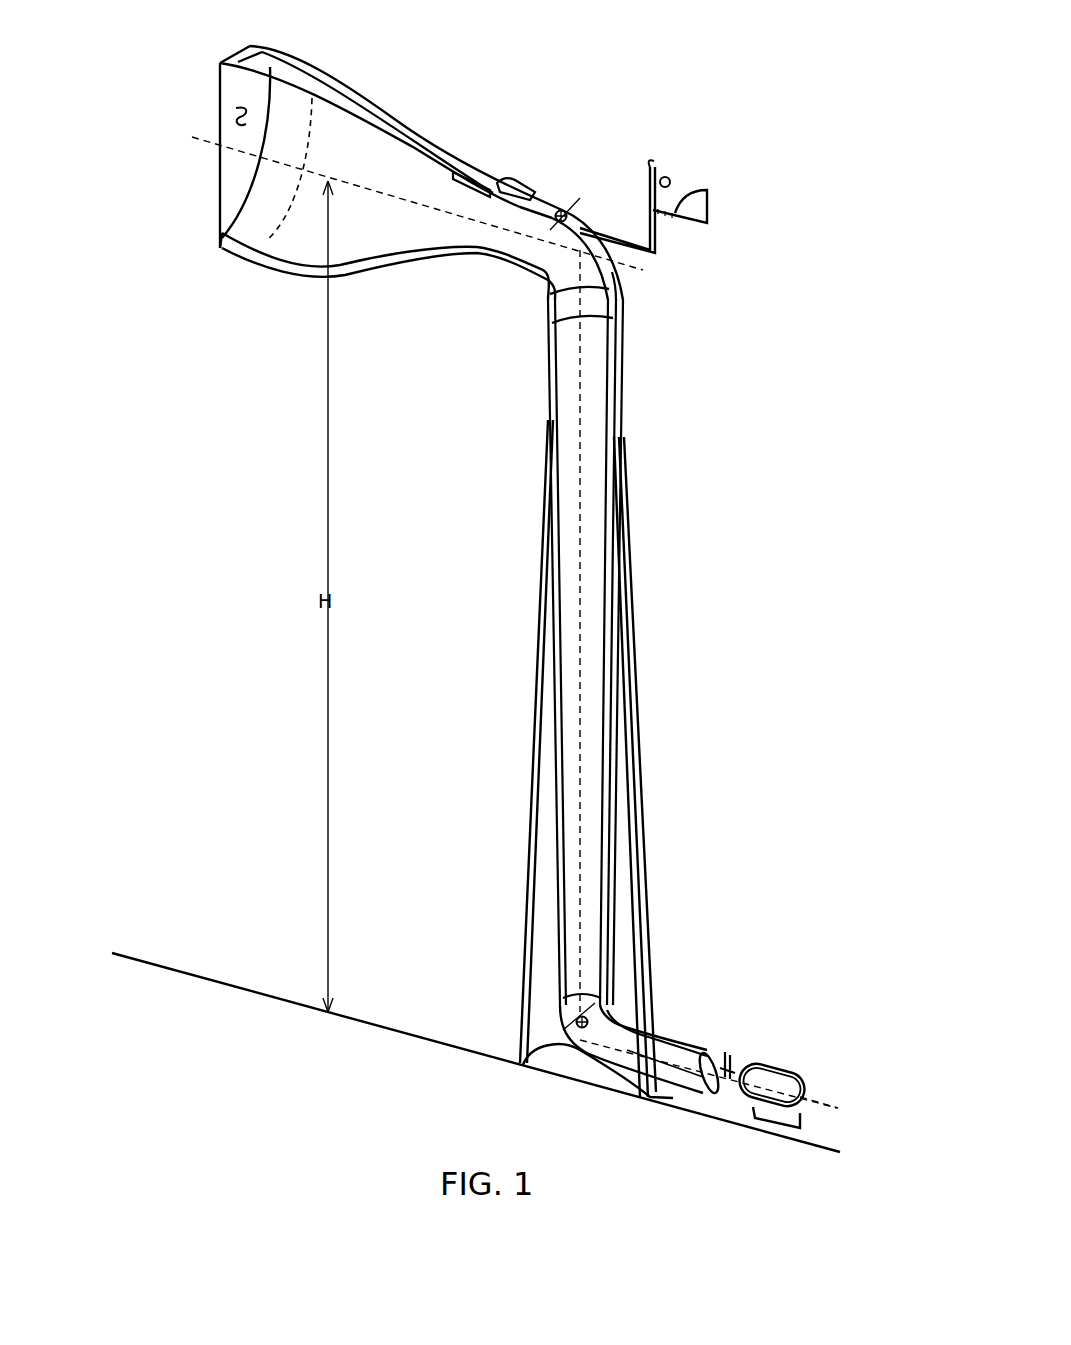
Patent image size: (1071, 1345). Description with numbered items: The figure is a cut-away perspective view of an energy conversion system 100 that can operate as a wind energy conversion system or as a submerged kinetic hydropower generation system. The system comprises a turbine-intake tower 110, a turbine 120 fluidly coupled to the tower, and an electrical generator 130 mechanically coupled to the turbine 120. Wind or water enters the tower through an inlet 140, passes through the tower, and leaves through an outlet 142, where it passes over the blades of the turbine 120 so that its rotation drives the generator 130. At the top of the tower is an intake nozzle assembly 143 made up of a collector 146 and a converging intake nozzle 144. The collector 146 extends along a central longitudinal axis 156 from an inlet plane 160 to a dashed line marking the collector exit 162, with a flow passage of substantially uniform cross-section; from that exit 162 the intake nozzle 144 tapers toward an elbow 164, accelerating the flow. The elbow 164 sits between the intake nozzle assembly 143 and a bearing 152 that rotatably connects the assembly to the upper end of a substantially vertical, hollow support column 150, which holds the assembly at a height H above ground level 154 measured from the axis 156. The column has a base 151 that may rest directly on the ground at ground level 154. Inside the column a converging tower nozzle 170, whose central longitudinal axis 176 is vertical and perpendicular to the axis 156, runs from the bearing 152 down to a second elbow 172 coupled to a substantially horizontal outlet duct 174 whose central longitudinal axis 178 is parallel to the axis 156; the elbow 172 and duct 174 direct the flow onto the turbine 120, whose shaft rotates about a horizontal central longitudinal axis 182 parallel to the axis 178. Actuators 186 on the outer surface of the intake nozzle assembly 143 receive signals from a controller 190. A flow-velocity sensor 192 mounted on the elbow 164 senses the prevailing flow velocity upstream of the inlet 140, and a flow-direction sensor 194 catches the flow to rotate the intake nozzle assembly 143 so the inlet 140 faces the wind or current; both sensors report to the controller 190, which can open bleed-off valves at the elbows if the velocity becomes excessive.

The energy conversion system 100 is at (808, 155).
The turbine-intake tower 110 is at (673, 392).
The turbine 120 is at (760, 1060).
The electrical generator 130 is at (776, 1085).
The inlet 140 is at (243, 83).
The outlet 142 is at (728, 1060).
The intake nozzle assembly 143 is at (357, 38).
The converging intake nozzle 144 is at (308, 265).
The collector 146 is at (265, 182).
The support column 150 is at (650, 803).
The base 151 is at (522, 1063).
The bearing 152 is at (565, 305).
The ground level 154 is at (812, 1148).
The central longitudinal axis 156 is at (425, 210).
The inlet plane 160 is at (237, 118).
The exit of collector 162 is at (260, 240).
The elbow 164 is at (550, 258).
The converging tower nozzle 170 is at (565, 575).
The elbow 172 is at (562, 1058).
The outlet duct 174 is at (673, 1008).
The central longitudinal axis 176 is at (584, 460).
The central longitudinal axis 178 is at (703, 1073).
The central longitudinal axis 182 is at (826, 1105).
The actuators 186 is at (322, 68).
The controller 190 is at (510, 180).
The flow-velocity sensor 192 is at (665, 176).
The flow-direction sensor 194 is at (700, 202).